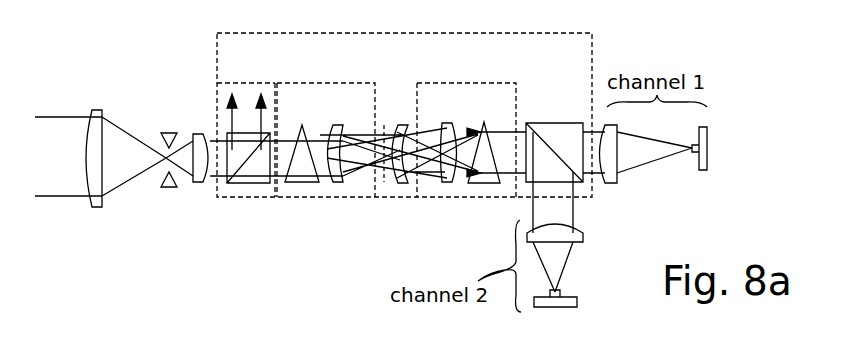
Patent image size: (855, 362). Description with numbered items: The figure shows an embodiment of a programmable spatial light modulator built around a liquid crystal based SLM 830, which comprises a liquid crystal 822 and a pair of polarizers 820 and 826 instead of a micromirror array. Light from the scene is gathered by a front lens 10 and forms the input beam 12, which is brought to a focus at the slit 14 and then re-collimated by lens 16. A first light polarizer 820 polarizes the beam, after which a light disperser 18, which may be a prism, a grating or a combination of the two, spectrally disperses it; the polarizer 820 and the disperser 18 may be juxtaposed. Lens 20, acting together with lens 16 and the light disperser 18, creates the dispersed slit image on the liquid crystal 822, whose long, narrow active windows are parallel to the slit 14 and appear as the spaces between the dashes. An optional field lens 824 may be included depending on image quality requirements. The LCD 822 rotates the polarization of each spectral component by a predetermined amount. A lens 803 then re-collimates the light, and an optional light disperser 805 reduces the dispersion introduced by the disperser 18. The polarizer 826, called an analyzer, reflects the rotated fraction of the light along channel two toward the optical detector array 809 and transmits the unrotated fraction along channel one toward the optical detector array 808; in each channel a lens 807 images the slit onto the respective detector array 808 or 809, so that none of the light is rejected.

The collecting lens 10 is at (94, 108).
The input beam 12 is at (125, 130).
The slit 14 is at (180, 130).
The lens 16 is at (198, 185).
The liquid crystal based SLM 830 is at (307, 33).
The first light polarizer 820 is at (237, 187).
The light disperser 18 is at (302, 185).
The lens 20 is at (338, 186).
The liquid crystal 822 is at (384, 184).
The field lens 824 is at (404, 185).
The lens 803 is at (444, 126).
The light disperser 805 is at (497, 113).
The polarizer 826 is at (573, 122).
The lens 807 is at (608, 184).
The optical detector array 808 is at (703, 173).
The optical detector array 809 is at (577, 303).